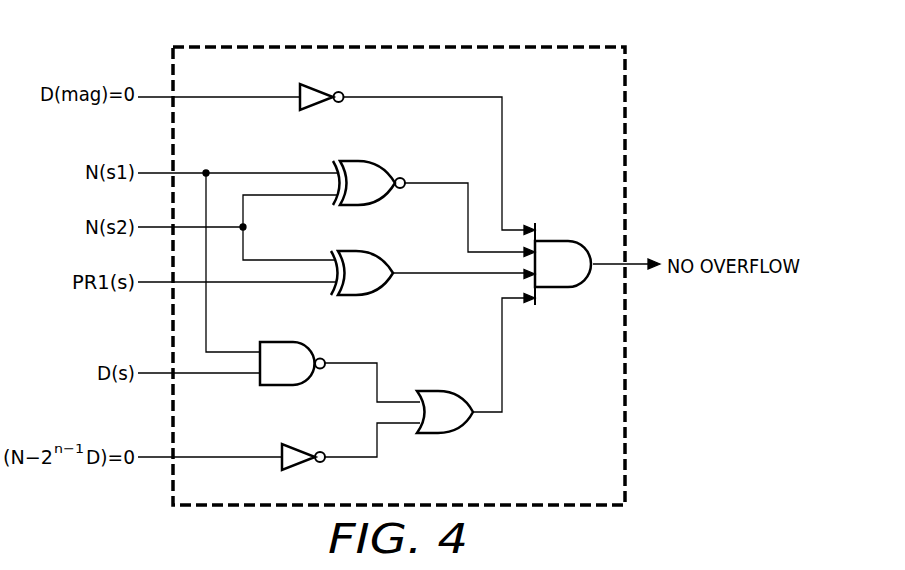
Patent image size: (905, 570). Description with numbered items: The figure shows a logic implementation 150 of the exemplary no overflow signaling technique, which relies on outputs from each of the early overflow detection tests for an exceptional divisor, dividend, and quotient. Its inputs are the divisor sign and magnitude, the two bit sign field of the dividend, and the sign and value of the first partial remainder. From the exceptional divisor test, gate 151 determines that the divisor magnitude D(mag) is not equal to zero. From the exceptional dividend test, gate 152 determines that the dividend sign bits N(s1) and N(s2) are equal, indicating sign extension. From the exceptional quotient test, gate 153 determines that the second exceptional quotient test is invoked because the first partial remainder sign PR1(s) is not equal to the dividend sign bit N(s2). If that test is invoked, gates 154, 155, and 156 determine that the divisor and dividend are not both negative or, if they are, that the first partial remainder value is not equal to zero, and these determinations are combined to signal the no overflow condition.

The logic implementation 150 is at (625, 128).
The gate 151 is at (300, 85).
The gate 152 is at (372, 162).
The gate 153 is at (372, 252).
The gate 154 is at (293, 386).
The gate 155 is at (282, 465).
The gate 156 is at (455, 433).